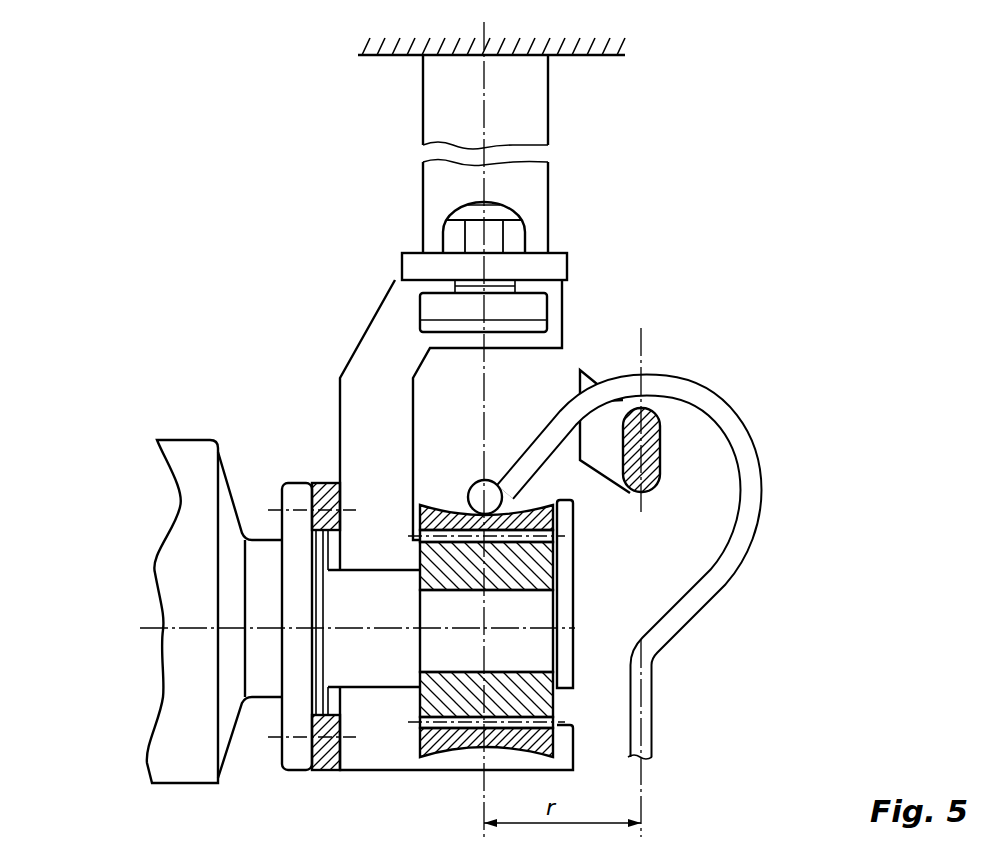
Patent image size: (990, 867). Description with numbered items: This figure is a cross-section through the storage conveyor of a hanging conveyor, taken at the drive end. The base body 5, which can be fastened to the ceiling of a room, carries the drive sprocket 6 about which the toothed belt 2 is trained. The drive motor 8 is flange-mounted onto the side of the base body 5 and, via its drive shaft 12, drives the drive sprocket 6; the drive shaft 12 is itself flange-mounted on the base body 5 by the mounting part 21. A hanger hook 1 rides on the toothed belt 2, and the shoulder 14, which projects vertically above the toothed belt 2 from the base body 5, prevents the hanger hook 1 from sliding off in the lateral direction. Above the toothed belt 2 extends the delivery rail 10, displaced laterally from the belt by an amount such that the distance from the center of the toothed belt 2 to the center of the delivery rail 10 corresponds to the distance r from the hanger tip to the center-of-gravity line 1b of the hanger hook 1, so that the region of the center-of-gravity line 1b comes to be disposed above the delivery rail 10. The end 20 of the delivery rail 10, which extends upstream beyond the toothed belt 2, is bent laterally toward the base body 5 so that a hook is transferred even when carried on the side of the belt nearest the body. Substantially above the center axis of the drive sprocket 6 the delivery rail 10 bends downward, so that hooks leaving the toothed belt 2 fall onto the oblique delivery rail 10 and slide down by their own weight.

The hanger hook 1 is at (750, 490).
The center-of-gravity line of the hanger hook 1b is at (652, 378).
The toothed belt 2 is at (557, 747).
The base body 5 is at (395, 320).
The drive sprocket 6 is at (452, 695).
The drive motor 8 is at (183, 578).
The delivery rail 10 is at (661, 437).
The drive shaft 12 is at (535, 642).
The shoulder 14 is at (558, 503).
The end of the delivery rail 20 is at (603, 423).
The mounting part 21 is at (322, 482).